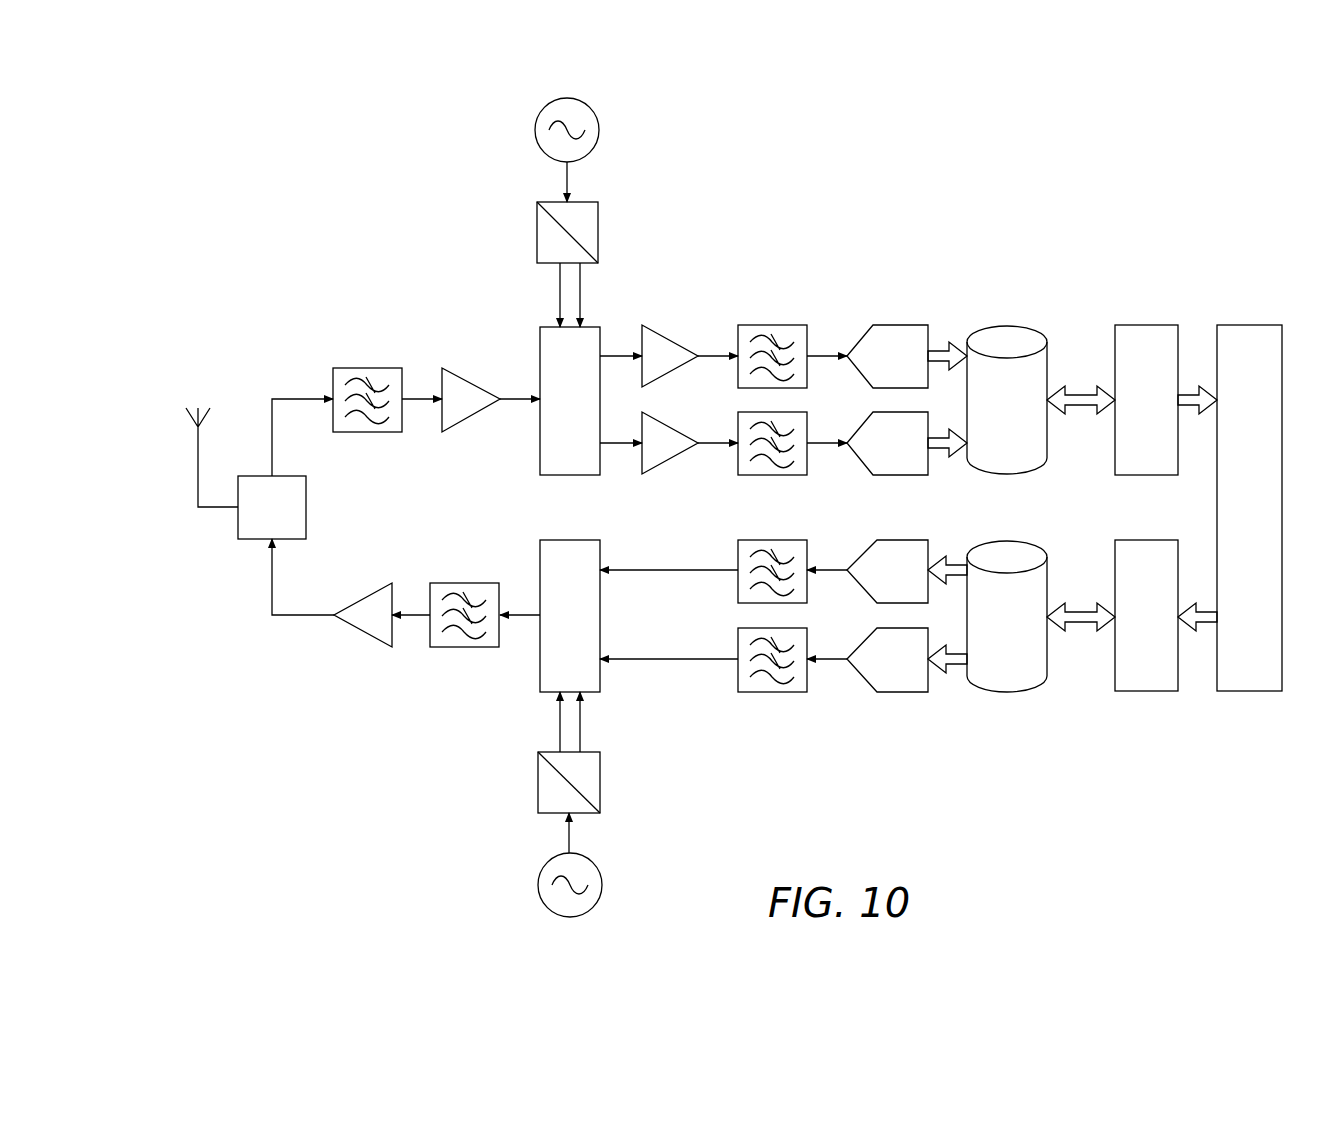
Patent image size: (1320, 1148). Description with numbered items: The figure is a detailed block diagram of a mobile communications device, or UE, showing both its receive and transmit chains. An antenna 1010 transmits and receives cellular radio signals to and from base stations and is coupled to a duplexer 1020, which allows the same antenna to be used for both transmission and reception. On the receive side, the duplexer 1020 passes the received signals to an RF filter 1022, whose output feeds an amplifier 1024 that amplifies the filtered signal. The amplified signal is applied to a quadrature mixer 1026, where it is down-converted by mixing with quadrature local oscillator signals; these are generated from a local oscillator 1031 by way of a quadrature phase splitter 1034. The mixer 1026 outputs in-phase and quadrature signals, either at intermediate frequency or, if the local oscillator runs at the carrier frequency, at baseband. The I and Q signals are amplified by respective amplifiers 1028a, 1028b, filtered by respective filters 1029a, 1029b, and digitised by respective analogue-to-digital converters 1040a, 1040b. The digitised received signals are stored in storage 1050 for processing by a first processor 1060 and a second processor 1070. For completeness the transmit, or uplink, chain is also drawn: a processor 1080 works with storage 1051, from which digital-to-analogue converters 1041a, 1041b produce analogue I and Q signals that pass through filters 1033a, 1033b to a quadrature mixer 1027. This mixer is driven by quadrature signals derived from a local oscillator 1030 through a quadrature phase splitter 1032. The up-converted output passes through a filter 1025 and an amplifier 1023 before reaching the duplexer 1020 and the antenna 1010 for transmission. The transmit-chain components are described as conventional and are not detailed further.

The antenna 1010 is at (198, 452).
The duplexer 1020 is at (306, 505).
The RF filter 1022 is at (373, 368).
The amplifier 1024 is at (470, 378).
The amplifier 1023 is at (358, 630).
The filter 1025 is at (460, 647).
The local oscillator 1031 is at (599, 128).
The quadrature phase splitter 1034 is at (598, 212).
The quadrature mixer 1026 is at (602, 398).
The amplifier 1028a is at (672, 340).
The amplifier 1028b is at (672, 458).
The filter 1029a is at (773, 325).
The filter 1029b is at (773, 475).
The analogue-to-digital converter 1040a is at (897, 325).
The analogue-to-digital converter 1040b is at (897, 475).
The storage 1050 is at (1007, 326).
The first processor 1060 is at (1146, 325).
The second processor 1070 is at (1250, 325).
The quadrature mixer 1027 is at (602, 612).
The filter 1033a is at (738, 550).
The filter 1033b is at (773, 692).
The digital-to-analogue converter 1041a is at (930, 540).
The digital-to-analogue converter 1041b is at (897, 692).
The storage 1051 is at (1007, 692).
The processor 1080 is at (1146, 691).
The quadrature phase splitter 1032 is at (600, 762).
The local oscillator 1030 is at (602, 880).